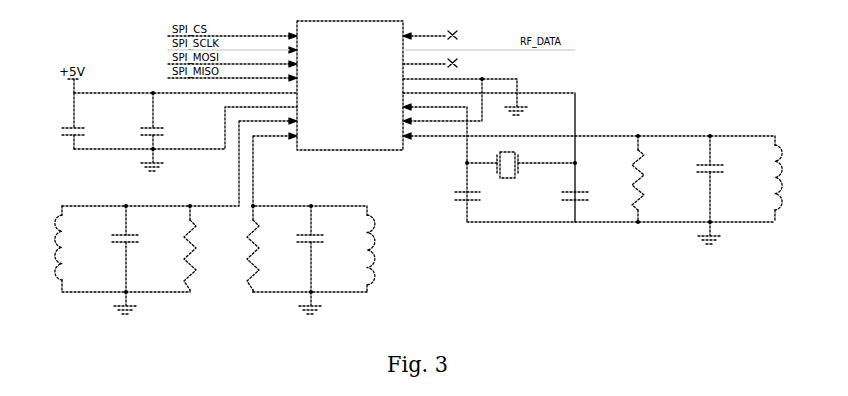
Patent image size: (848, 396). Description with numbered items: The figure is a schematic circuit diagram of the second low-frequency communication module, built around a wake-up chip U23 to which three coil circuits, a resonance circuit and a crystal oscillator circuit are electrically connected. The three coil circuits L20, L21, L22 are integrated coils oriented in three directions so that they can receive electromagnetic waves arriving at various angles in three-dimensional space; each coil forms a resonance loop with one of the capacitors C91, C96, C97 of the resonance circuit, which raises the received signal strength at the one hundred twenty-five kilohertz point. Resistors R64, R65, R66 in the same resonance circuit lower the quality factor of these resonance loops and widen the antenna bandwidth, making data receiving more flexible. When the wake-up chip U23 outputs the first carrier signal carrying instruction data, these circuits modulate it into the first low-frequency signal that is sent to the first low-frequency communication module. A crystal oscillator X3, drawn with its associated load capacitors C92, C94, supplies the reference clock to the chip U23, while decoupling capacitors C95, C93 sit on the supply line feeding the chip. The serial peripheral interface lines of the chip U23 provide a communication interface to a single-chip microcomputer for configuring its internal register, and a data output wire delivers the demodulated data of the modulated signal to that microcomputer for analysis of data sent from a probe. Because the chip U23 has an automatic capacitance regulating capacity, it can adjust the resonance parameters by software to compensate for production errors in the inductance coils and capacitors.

The chip U23 is at (350, 79).
The 22uF decoupling capacitor C95 is at (89, 121).
The 0.1uF decoupling capacitor C93 is at (170, 121).
The crystal oscillator X3 is at (521, 158).
The 12pF crystal load capacitor C92 is at (478, 194).
The 12pF crystal load capacitor C94 is at (585, 191).
The resistor R64 is at (654, 179).
The capacitor C91 is at (727, 179).
The coil circuit L20 is at (794, 179).
The coil circuit L22 is at (41, 249).
The capacitor C97 is at (110, 249).
The resistor R66 is at (176, 249).
The resistor R65 is at (267, 249).
The capacitor C96 is at (327, 249).
The coil circuit L21 is at (388, 249).